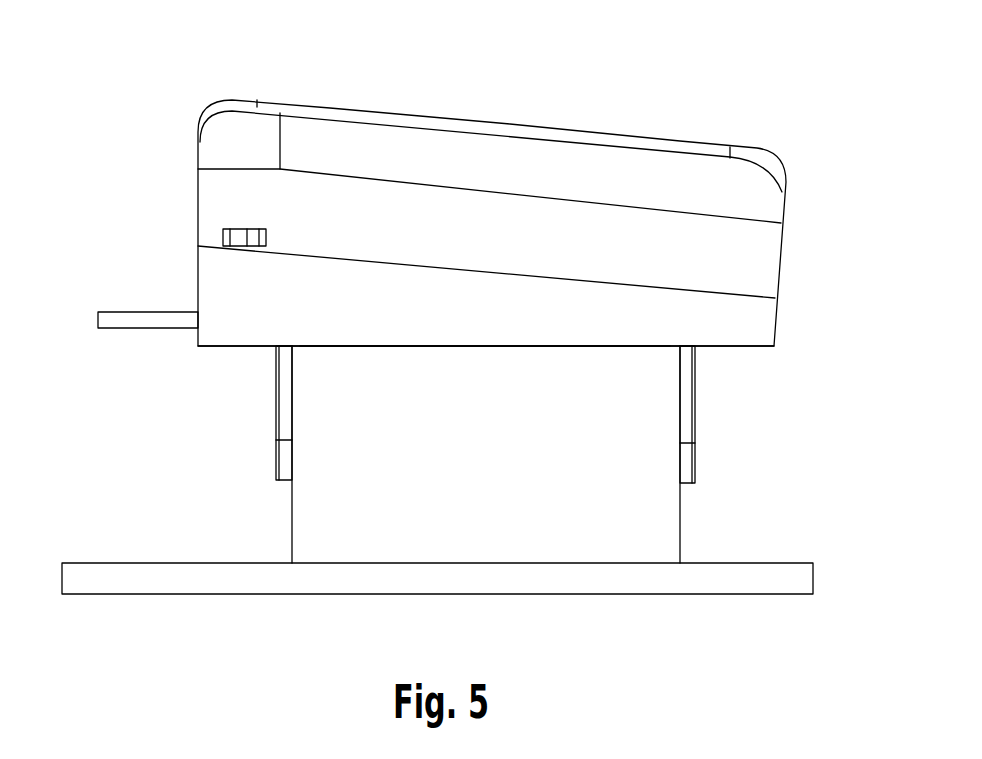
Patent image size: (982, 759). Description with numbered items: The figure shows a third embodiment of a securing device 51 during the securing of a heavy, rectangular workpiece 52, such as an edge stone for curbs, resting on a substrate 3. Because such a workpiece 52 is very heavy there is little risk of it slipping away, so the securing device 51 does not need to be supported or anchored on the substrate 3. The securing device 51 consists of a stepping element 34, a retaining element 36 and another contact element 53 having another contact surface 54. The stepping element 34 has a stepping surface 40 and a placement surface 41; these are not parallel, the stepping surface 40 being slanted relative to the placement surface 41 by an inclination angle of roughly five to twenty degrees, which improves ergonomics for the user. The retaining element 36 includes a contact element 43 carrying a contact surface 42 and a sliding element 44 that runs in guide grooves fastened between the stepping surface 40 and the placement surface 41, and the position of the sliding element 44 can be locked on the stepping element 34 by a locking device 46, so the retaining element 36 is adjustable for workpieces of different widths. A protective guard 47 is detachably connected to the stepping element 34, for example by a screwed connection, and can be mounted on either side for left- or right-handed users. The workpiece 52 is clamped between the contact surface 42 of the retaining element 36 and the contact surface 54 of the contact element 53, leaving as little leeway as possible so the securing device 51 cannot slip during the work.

The substrate 3 is at (108, 562).
The stepping element 34 is at (747, 323).
The retaining element 36 is at (105, 300).
The stepping surface 40 is at (438, 263).
The placement surface 41 is at (470, 349).
The contact surface 42 is at (294, 424).
The contact element 43 is at (280, 400).
The sliding element 44 is at (137, 320).
The locking device 46 is at (243, 236).
The protective guard 47 is at (603, 167).
The securing device 51 is at (752, 122).
The workpiece 52 is at (443, 517).
The contact element 53 is at (688, 408).
The contact surface 54 is at (678, 460).